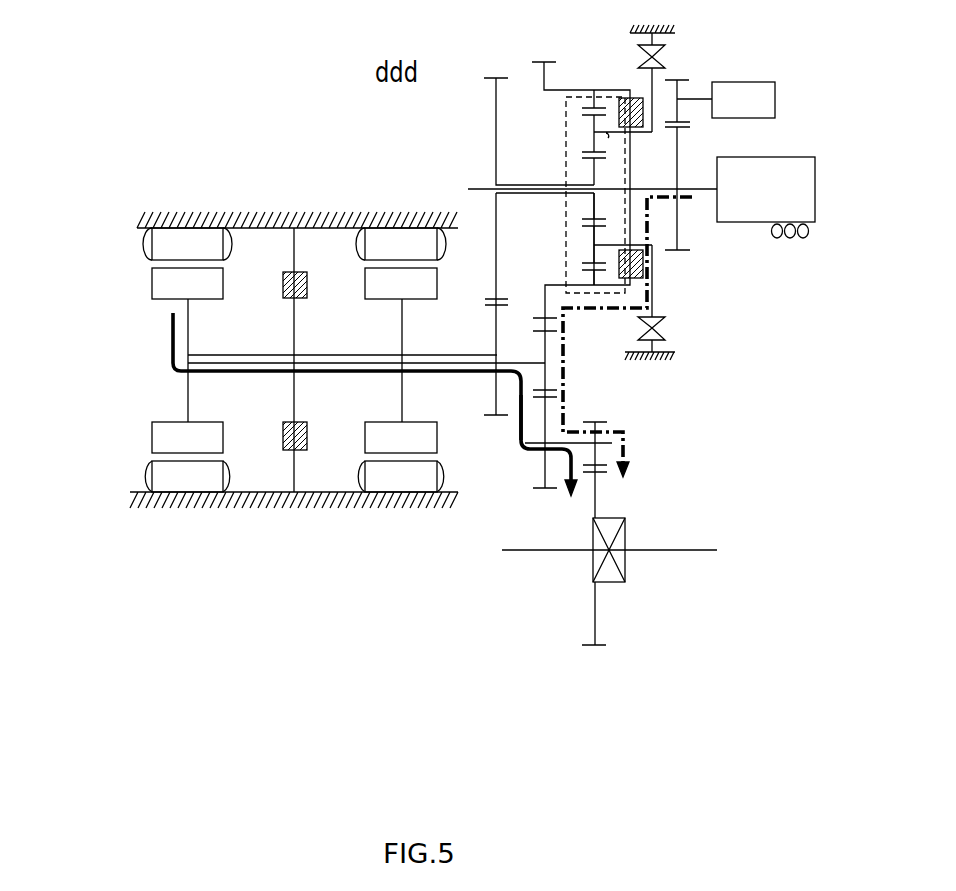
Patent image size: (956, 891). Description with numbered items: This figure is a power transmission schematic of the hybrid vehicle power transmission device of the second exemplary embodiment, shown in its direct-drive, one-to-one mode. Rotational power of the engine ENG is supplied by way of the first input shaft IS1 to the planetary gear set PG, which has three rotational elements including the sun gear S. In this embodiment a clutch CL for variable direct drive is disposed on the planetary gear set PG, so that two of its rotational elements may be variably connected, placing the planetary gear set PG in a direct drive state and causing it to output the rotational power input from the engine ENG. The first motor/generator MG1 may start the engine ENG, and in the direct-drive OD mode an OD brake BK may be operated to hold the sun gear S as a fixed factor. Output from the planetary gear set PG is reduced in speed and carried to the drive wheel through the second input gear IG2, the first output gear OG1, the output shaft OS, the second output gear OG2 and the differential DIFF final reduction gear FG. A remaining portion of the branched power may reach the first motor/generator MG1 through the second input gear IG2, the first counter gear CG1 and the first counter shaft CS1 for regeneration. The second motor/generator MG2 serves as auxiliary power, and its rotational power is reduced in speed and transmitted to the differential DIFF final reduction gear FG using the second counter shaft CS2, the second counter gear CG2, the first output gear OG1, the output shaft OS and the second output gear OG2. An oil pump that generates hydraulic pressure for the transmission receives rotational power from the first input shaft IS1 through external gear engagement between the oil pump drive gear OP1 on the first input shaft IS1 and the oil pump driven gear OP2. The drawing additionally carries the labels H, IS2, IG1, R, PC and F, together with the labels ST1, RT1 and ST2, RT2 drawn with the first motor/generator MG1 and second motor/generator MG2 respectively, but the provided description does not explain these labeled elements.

The housing (fixed element) H is at (318, 214).
The second motor/generator MG2 is at (141, 360).
The second stator ST2 is at (187, 360).
The second rotor RT2 is at (187, 360).
The first motor/generator MG1 is at (377, 360).
The first stator ST1 is at (401, 360).
The first rotor RT1 is at (401, 360).
The OD brake BK is at (265, 287).
The first counter shaft CS1 is at (357, 365).
The second counter shaft CS2 is at (232, 362).
The output shaft OS is at (533, 449).
The first input gear IG1 is at (495, 96).
The second input gear IG2 is at (542, 75).
The first input shaft IS1 is at (660, 200).
The second input shaft IS2 is at (538, 196).
The first counter gear CG1 is at (495, 337).
The second counter gear CG2 is at (545, 378).
The first output gear OG1 is at (545, 407).
The second output gear OG2 is at (605, 422).
The planetary gear set PG is at (579, 192).
The ring gear R is at (592, 123).
The planet carrier PC is at (608, 135).
The sun gear S is at (592, 160).
The clutch CL is at (630, 84).
The fixing brake F is at (628, 42).
The oil pump drive gear OP1 is at (678, 147).
The oil pump driven gear OP2 is at (678, 91).
The engine ENG is at (766, 197).
The differential final reduction gear FG is at (597, 493).
The differential DIFF is at (627, 533).